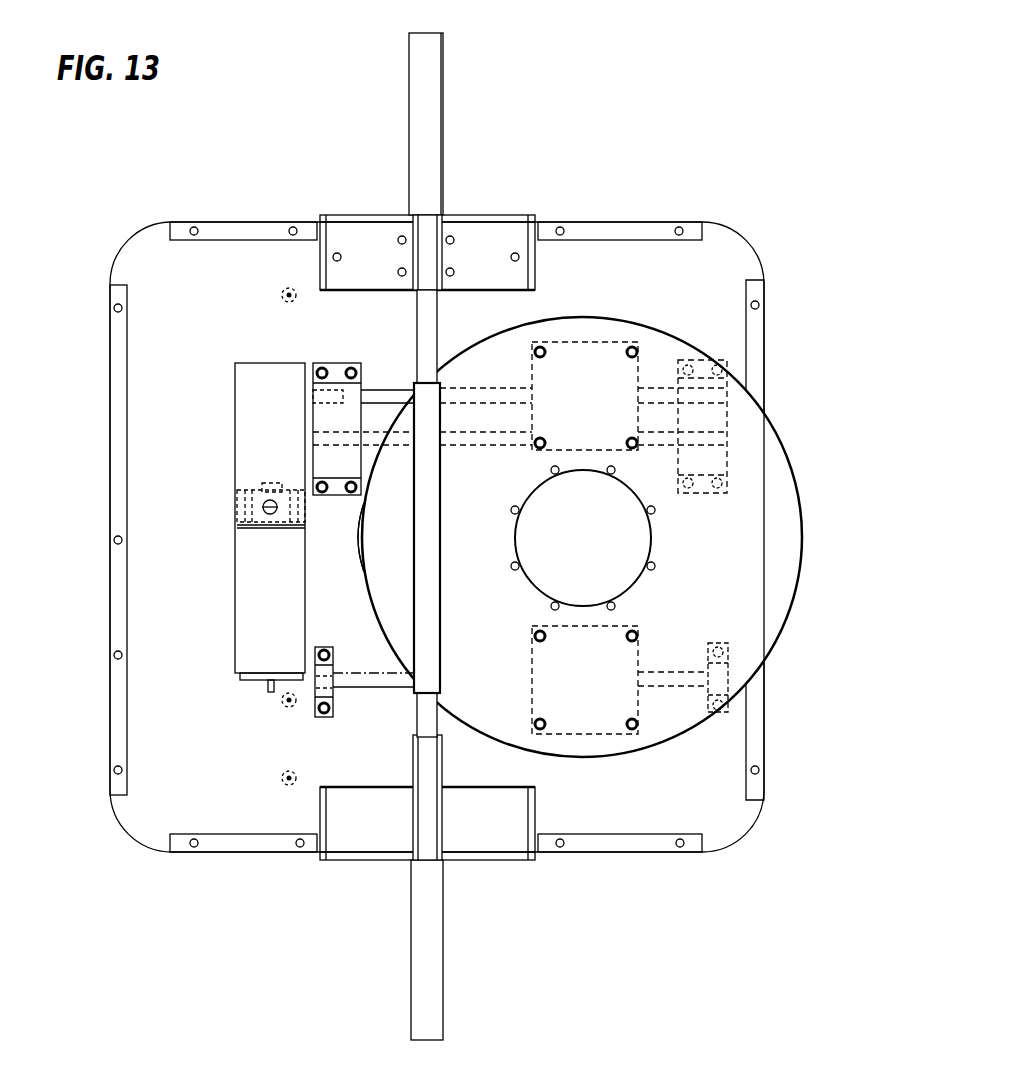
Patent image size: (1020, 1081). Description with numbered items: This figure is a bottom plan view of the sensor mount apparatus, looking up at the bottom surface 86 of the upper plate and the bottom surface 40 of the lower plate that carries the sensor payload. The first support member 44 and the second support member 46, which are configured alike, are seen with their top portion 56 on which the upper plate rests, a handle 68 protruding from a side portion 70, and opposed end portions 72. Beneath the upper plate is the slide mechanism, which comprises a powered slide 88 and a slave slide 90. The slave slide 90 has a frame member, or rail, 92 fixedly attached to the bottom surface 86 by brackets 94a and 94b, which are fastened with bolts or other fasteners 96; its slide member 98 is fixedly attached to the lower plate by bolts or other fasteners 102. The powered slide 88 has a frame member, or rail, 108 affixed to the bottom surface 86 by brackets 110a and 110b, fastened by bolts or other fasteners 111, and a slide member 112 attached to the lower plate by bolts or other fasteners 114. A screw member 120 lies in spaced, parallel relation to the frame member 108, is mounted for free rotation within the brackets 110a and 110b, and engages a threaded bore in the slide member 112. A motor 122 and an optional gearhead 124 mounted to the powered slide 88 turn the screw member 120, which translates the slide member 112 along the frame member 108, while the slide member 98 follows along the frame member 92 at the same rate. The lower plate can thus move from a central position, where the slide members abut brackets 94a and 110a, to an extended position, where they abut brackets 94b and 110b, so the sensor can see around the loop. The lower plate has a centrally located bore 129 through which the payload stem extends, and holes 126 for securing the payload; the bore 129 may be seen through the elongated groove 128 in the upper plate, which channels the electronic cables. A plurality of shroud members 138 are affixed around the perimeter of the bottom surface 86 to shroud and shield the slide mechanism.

The bottom surface 40 is at (482, 560).
The first support member 44 is at (482, 120).
The second support member 46 is at (456, 908).
The top portion 56 is at (371, 268).
The handle 68 is at (434, 96).
The side portion 70 is at (470, 216).
The end portions 72 is at (320, 218).
The bottom surface 86 is at (196, 304).
The powered slide 88 is at (694, 342).
The slave slide 90 is at (600, 760).
The frame member 92 is at (357, 683).
The bracket 94a is at (316, 718).
The bracket 94b is at (722, 712).
The fasteners 96 is at (318, 708).
The slide member 98 is at (578, 735).
The fasteners 102 is at (627, 720).
The frame member 108 is at (320, 368).
The bracket 110a is at (345, 397).
The bracket 110b is at (700, 494).
The fasteners 111 is at (720, 481).
The slide member 112 is at (648, 343).
The fasteners 114 is at (630, 438).
The screw member 120 is at (386, 388).
The motor 122 is at (246, 565).
The gearhead 124 is at (248, 462).
The holes 126 is at (656, 512).
The elongated groove 128 is at (364, 553).
The bore 129 is at (603, 550).
The shroud member 138 is at (225, 221).